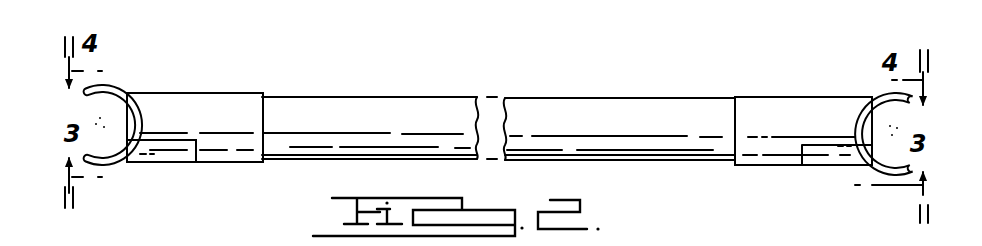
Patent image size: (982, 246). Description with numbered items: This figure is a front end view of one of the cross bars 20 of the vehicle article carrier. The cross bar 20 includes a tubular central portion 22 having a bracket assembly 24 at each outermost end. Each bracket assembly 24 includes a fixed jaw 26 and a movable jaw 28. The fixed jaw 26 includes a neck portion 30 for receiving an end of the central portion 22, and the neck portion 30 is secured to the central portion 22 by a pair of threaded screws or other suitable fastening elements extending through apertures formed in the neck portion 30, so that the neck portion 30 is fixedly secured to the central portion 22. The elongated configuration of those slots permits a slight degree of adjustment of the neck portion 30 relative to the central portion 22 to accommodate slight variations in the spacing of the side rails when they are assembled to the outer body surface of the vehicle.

The cross bar 20 is at (162, 58).
The tubular central portion 22 is at (377, 110).
The bracket assembly 24 is at (205, 169).
The fixed jaw 26 is at (186, 88).
The movable jaw 28 is at (145, 162).
The neck portion 30 is at (230, 100).